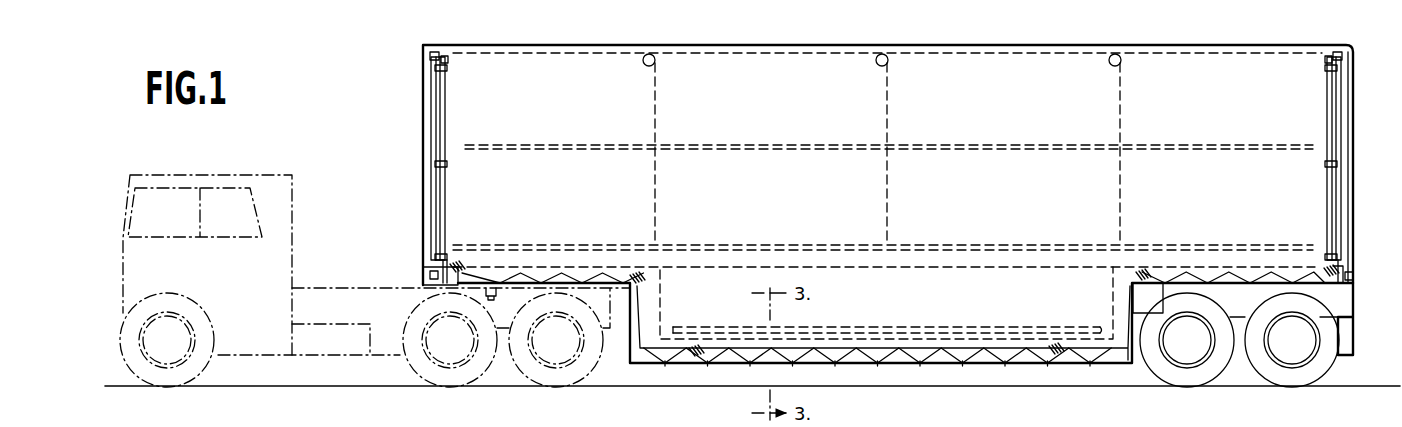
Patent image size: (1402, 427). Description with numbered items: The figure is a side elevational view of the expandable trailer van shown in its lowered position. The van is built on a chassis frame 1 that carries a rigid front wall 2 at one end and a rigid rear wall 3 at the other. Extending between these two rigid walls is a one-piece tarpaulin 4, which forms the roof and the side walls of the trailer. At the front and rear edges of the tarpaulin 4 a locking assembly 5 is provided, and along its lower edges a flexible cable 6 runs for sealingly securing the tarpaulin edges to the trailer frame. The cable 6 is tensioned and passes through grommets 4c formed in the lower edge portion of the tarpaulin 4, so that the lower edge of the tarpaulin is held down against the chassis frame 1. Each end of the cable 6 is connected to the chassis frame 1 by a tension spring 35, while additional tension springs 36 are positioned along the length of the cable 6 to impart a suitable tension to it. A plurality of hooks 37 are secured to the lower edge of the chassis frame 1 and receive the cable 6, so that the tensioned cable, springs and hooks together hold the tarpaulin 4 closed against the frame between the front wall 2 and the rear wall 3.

The chassis frame 1 is at (684, 365).
The rigid front wall 2 is at (421, 189).
The rigid rear wall 3 is at (1356, 127).
The one-piece tarpaulin 4 is at (463, 127).
The grommets 4c is at (895, 348).
The locking assembly 5 is at (449, 208).
The flexible cable 6 is at (862, 350).
The tension spring 35 is at (457, 264).
The additional tension springs 36 is at (641, 281).
The hooks 37 is at (748, 365).